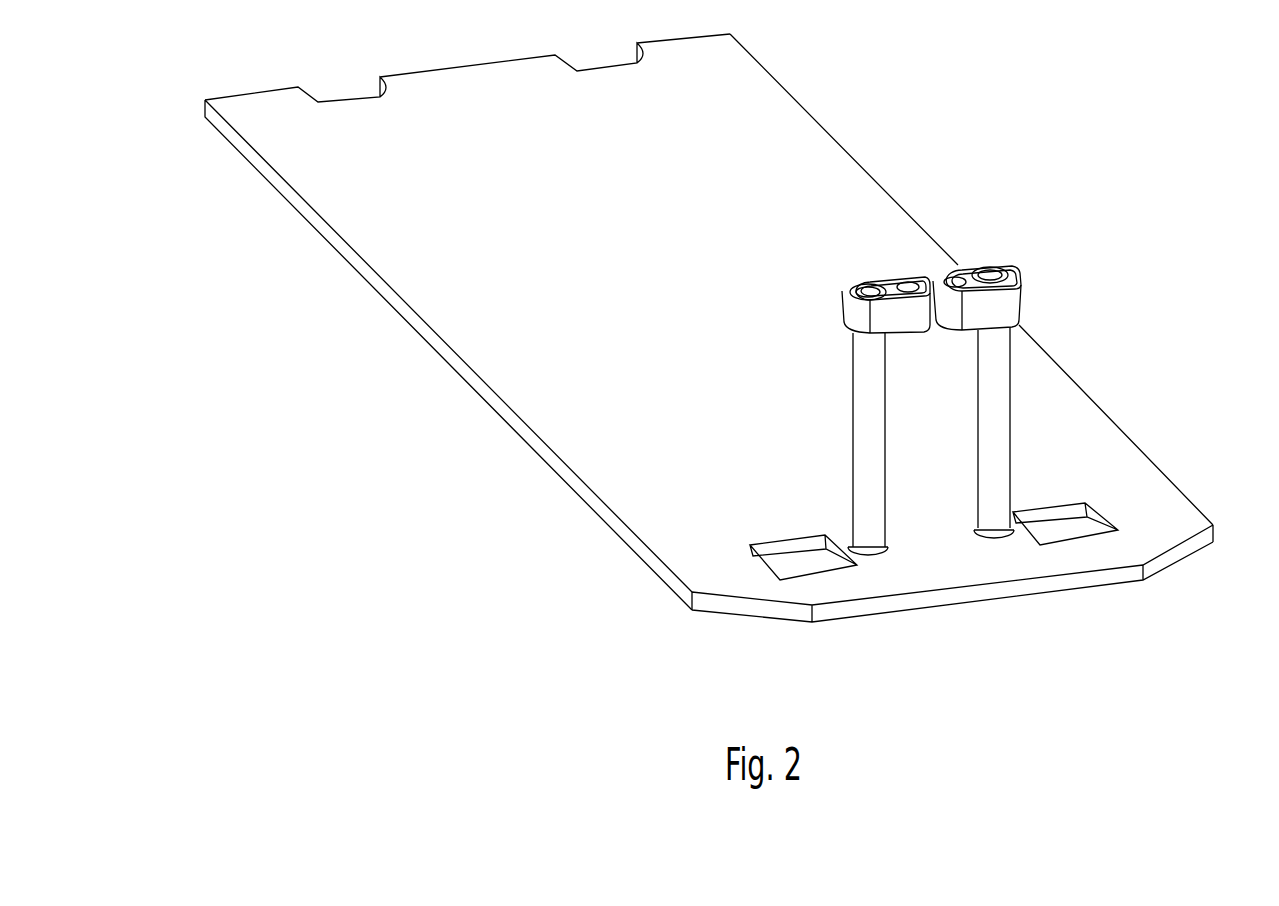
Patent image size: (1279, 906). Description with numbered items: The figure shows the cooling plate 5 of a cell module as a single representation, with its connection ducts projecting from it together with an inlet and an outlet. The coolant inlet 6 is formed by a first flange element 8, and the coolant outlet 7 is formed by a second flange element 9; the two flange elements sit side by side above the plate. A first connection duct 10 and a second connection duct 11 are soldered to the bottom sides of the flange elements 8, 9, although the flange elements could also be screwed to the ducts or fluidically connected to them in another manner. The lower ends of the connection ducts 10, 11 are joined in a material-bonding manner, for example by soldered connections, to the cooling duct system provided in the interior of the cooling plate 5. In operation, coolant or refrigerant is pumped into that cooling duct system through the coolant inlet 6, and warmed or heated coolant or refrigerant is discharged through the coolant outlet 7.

The cooling plate 5 is at (795, 133).
The coolant inlet 6 is at (868, 292).
The coolant outlet 7 is at (988, 277).
The first flange element 8 is at (886, 284).
The second flange element 9 is at (1001, 263).
The first connection duct 10 is at (873, 497).
The second connection duct 11 is at (988, 497).